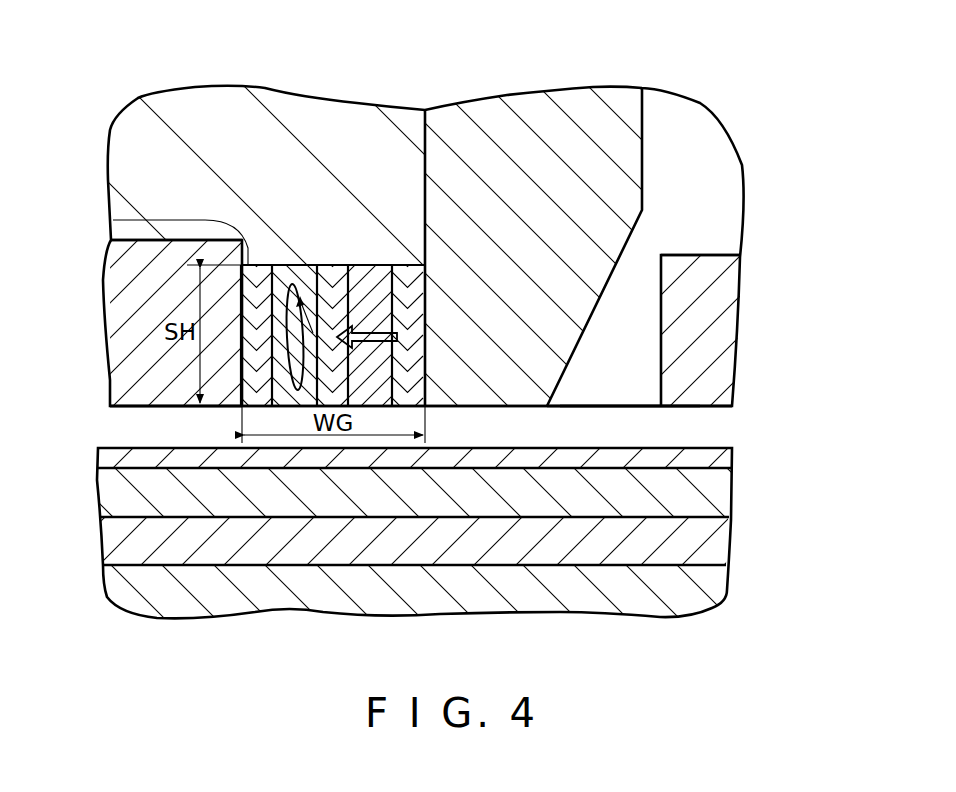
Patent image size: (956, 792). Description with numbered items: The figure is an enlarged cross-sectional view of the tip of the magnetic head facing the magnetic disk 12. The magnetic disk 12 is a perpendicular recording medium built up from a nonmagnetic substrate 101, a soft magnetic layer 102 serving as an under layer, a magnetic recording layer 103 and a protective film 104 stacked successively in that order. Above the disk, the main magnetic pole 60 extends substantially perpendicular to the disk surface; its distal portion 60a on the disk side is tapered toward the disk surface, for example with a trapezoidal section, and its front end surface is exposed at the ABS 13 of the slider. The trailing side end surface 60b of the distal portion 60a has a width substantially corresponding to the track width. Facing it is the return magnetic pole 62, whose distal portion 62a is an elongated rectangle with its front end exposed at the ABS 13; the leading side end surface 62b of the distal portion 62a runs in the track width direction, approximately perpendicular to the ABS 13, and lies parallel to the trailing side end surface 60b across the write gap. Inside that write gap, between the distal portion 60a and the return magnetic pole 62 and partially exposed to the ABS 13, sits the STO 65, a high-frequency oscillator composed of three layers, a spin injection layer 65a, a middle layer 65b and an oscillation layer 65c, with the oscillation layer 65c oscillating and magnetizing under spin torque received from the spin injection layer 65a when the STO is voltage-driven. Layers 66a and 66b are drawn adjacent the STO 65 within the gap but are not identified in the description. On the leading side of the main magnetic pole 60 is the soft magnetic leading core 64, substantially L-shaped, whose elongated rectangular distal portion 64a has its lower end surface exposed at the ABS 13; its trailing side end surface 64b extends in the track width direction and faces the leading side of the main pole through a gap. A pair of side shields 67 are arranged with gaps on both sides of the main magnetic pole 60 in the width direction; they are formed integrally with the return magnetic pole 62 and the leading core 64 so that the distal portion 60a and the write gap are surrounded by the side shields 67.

The magnetic disk 12 is at (478, 396).
The ABS 13 is at (623, 410).
The main magnetic pole 60 is at (594, 104).
The distal portion of the main magnetic pole 60a is at (505, 365).
The trailing side end surface 60b is at (423, 222).
The return magnetic pole 62 is at (120, 289).
The distal portion of the return magnetic pole 62a is at (148, 388).
The leading side end surface 62b is at (112, 218).
The leading core 64 is at (724, 300).
The distal portion of the leading core 64a is at (713, 385).
The trailing side end surface 64b is at (660, 280).
The STO 65 is at (421, 396).
The spin injection layer 65a is at (370, 278).
The middle layer 65b is at (333, 278).
The oscillation layer 65c is at (302, 278).
The first insulating layer 66a is at (407, 278).
The second insulating layer 66b is at (262, 278).
The side shields 67 is at (588, 393).
The substrate 101 is at (800, 450).
The soft magnetic layer 102 is at (716, 548).
The magnetic recording layer 103 is at (716, 497).
The protective film 104 is at (716, 460).